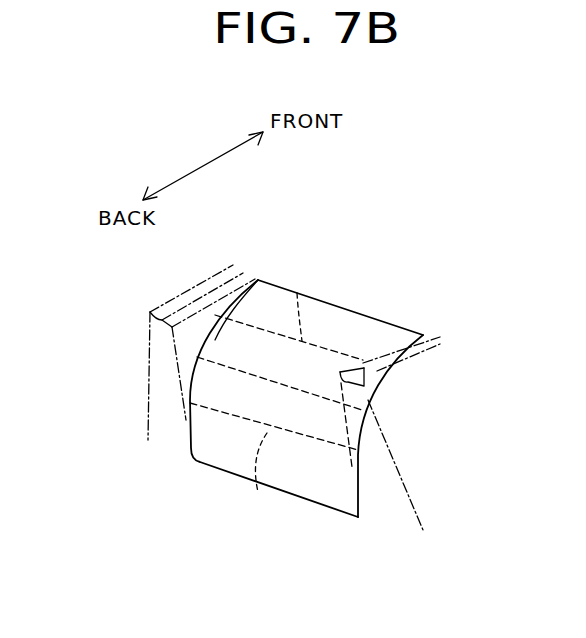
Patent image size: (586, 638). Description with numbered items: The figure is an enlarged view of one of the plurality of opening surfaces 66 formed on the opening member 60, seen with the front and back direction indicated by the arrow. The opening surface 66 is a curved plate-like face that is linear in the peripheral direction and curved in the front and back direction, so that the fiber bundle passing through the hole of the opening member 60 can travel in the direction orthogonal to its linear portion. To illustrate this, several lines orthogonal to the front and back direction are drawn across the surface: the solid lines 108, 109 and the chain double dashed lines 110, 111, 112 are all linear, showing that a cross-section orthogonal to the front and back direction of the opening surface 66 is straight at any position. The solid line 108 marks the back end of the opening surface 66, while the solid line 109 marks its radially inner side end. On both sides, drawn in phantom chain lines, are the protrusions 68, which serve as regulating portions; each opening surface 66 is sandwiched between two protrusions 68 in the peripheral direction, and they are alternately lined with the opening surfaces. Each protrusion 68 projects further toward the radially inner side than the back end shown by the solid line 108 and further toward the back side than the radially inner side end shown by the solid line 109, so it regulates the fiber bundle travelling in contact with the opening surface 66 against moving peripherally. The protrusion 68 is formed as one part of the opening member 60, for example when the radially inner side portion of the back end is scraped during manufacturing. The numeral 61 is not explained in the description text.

The opening member 60 is at (483, 193).
The back panel 61 is at (432, 315).
The opening surface 66 is at (312, 478).
The protrusion 68 is at (157, 390).
The solid line 108 is at (212, 470).
The solid line 109 is at (387, 322).
The chain double dashed line 110 is at (258, 492).
The chain double dashed line 111 is at (262, 278).
The chain double dashed line 112 is at (297, 293).